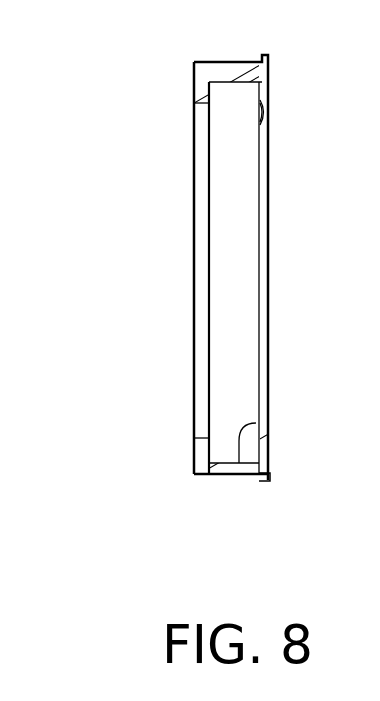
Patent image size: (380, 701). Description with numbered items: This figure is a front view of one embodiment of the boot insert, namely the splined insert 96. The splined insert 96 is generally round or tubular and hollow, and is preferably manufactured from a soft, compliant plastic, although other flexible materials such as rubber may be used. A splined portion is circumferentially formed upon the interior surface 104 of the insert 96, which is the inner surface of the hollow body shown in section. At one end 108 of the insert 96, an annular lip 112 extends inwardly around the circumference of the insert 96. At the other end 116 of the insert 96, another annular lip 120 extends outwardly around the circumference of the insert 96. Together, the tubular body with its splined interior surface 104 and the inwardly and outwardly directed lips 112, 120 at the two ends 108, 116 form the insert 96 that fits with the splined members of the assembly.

The splined insert 96 is at (267, 120).
The interior surface 104 is at (256, 423).
The one end of the insert 108 is at (197, 476).
The annular lip 112 is at (193, 457).
The other end of the insert 116 is at (260, 476).
The annular lip 120 is at (271, 479).